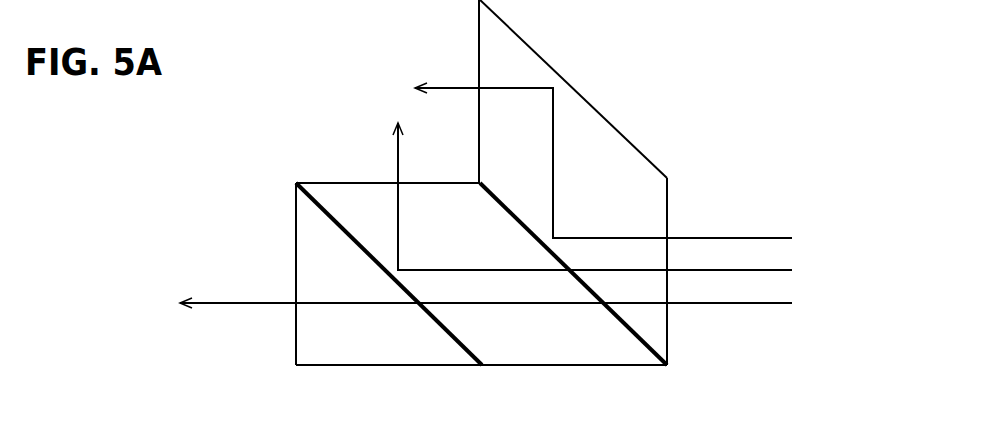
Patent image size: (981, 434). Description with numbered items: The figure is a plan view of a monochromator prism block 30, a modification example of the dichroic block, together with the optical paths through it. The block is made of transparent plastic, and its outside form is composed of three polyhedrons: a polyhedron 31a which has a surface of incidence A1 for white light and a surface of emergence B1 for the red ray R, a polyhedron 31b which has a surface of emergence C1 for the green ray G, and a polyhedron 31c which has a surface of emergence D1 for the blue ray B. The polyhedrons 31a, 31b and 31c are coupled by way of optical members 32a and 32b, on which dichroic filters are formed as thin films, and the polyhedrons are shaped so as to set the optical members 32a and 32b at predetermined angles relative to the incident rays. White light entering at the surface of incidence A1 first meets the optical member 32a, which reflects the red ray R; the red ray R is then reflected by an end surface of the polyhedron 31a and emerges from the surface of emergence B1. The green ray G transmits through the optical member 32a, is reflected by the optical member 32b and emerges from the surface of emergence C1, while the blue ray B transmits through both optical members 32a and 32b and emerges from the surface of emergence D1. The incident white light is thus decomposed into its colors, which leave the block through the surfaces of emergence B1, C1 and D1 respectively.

The monochromator prism block 30 is at (504, 211).
The polyhedron 31a is at (635, 183).
The polyhedron 31b is at (560, 350).
The polyhedron 31c is at (357, 350).
The optical member 32a is at (492, 187).
The optical member 32b is at (327, 216).
The surface of incidence A1 is at (669, 333).
The surface of emergence B1 is at (479, 31).
The surface of emergence C1 is at (366, 183).
The surface of emergence D1 is at (296, 338).
The red ray R is at (631, 167).
The green ray G is at (621, 203).
The blue ray B is at (513, 301).